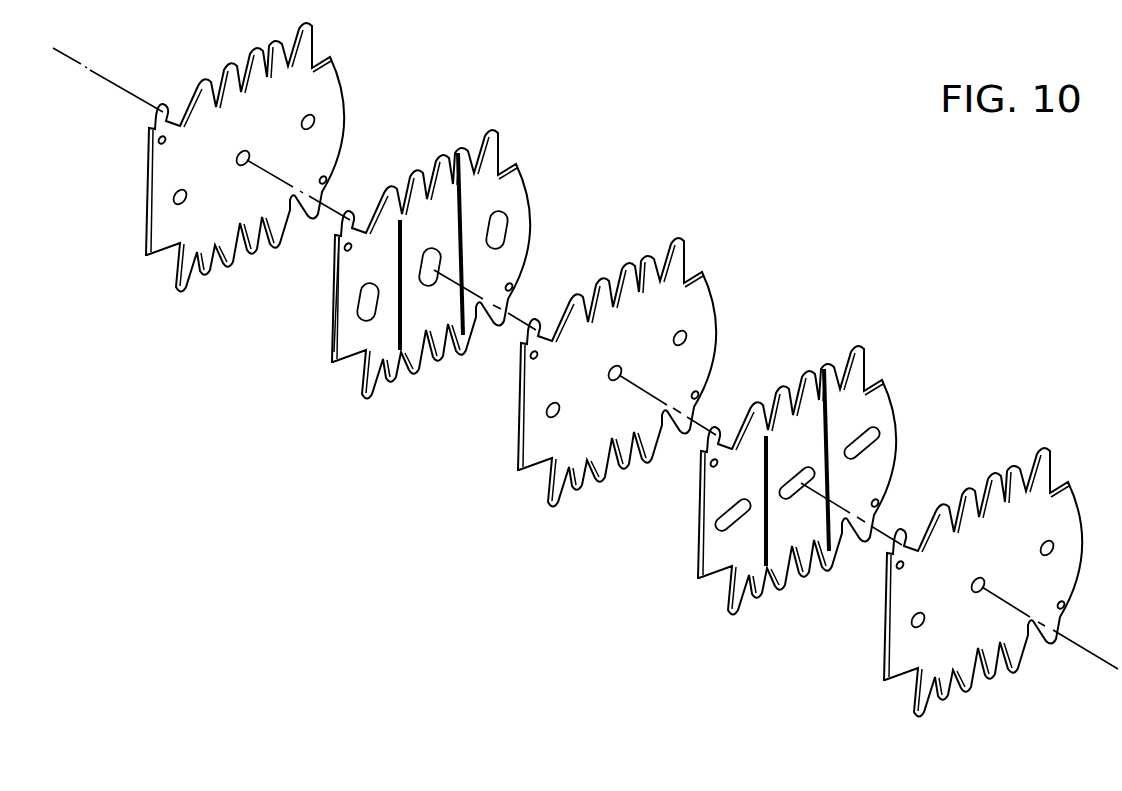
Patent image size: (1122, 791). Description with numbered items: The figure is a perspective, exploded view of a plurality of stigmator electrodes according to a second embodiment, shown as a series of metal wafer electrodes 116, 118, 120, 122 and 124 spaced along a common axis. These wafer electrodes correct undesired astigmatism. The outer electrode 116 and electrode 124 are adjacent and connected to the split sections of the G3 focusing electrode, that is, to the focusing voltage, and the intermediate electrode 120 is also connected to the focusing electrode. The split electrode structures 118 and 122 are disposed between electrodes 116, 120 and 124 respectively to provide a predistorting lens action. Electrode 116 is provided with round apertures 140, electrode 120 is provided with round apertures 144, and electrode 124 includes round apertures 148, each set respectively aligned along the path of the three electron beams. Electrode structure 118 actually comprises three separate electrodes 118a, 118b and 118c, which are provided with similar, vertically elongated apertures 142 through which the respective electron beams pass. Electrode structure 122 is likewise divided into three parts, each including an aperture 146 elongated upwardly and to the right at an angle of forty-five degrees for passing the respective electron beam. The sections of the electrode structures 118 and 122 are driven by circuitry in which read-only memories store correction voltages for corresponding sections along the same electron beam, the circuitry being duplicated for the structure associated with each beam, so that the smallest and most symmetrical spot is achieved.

The wafer electrode 116 is at (183, 312).
The split electrode structure 118 is at (344, 388).
The electrode 118a is at (336, 283).
The electrode 118b is at (400, 217).
The electrode 118c is at (492, 153).
The intermediate electrode 120 is at (522, 488).
The split electrode structure 122 is at (706, 602).
The wafer electrode 124 is at (888, 696).
The round apertures 140 is at (300, 127).
The vertically elongated apertures 142 is at (505, 216).
The round apertures 144 is at (552, 402).
The aperture 146 is at (747, 492).
The round apertures 148 is at (1043, 540).